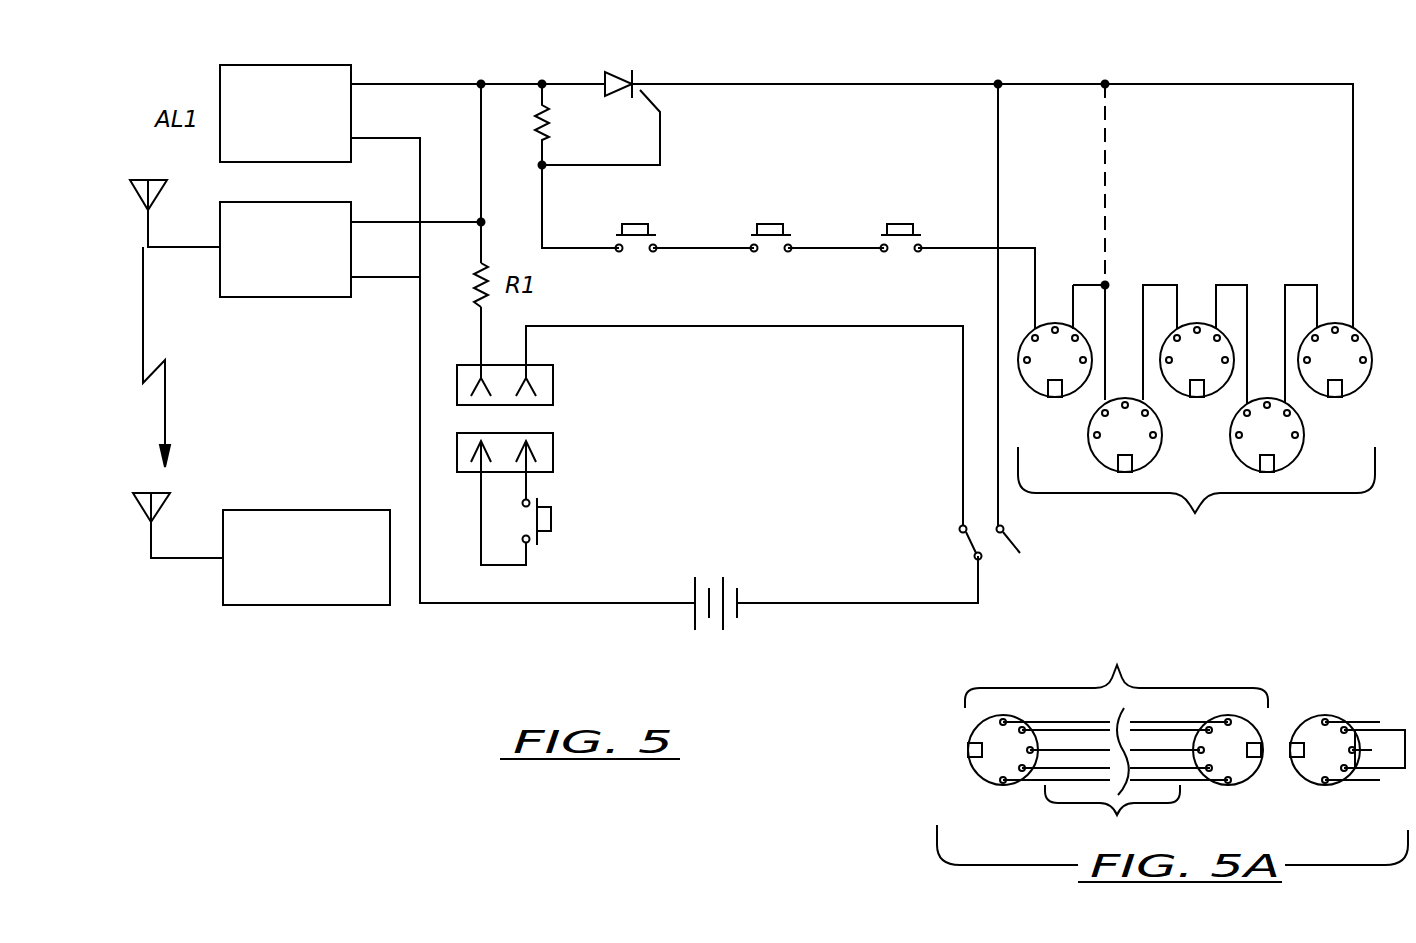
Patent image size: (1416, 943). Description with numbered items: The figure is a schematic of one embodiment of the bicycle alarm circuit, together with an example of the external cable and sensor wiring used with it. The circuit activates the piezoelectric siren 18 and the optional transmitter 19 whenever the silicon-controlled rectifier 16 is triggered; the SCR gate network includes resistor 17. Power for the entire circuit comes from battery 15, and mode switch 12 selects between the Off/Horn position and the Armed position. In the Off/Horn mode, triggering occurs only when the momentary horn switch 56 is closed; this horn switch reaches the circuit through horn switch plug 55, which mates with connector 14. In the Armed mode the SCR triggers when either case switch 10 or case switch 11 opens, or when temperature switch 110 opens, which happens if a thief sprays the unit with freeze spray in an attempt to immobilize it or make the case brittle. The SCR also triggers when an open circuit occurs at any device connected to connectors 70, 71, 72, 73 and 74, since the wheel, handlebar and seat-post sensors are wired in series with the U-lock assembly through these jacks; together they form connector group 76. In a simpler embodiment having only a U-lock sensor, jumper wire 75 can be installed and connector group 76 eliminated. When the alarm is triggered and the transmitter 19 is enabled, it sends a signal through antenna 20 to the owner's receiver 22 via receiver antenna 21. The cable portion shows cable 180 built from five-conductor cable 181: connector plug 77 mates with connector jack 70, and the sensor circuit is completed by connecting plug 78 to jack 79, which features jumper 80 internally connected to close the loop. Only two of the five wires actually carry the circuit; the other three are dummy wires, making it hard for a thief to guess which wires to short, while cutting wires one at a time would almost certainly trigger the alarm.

In FIG. 5, the piezoelectric siren 18 is at (300, 65).
In FIG. 5, the antenna 20 is at (158, 200).
In FIG. 5, the transmitter 19 is at (265, 297).
In FIG. 5, the receiver antenna 21 is at (158, 512).
In FIG. 5, the receiver 22 is at (275, 605).
In FIG. 5, the silicon-controlled rectifier 16 is at (640, 80).
In FIG. 5, the resistor 17 is at (540, 128).
In FIG. 5, the switch 11 is at (633, 236).
In FIG. 5, the switch 10 is at (768, 236).
In FIG. 5, the temperature switch 110 is at (898, 236).
In FIG. 5, the jumper wire 75 is at (1105, 120).
In FIG. 5, the connector 70 is at (1046, 386).
In FIG. 5, the connector 71 is at (1092, 448).
In FIG. 5, the connector 72 is at (1188, 386).
In FIG. 5, the connector 73 is at (1236, 448).
In FIG. 5, the connector 74 is at (1357, 380).
In FIG. 5, the connector group 76 is at (1199, 438).
In FIG. 5, the connector 14 is at (540, 365).
In FIG. 5, the horn switch plug 55 is at (468, 473).
In FIG. 5, the momentary horn switch 56 is at (533, 545).
In FIG. 5, the battery 15 is at (740, 590).
In FIG. 5, the switch 12 is at (984, 540).
In FIG. 5A, the connector plug P2 77 is at (985, 775).
In FIG. 5A, the plug P7 78 is at (1250, 772).
In FIG. 5A, the jack J7 79 is at (1313, 775).
In FIG. 5A, the jumper 80 is at (1406, 800).
In FIG. 5A, the cable 180 is at (1116, 673).
In FIG. 5A, the 5-conductor cable 181 is at (1115, 778).